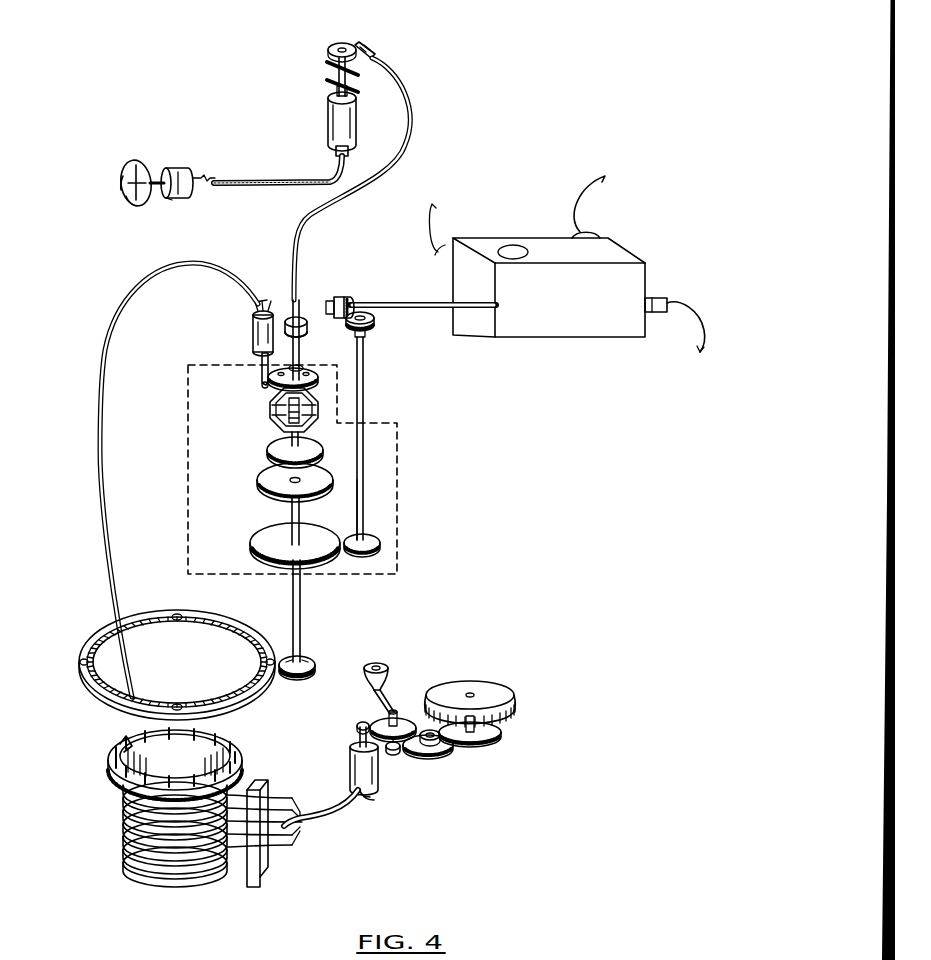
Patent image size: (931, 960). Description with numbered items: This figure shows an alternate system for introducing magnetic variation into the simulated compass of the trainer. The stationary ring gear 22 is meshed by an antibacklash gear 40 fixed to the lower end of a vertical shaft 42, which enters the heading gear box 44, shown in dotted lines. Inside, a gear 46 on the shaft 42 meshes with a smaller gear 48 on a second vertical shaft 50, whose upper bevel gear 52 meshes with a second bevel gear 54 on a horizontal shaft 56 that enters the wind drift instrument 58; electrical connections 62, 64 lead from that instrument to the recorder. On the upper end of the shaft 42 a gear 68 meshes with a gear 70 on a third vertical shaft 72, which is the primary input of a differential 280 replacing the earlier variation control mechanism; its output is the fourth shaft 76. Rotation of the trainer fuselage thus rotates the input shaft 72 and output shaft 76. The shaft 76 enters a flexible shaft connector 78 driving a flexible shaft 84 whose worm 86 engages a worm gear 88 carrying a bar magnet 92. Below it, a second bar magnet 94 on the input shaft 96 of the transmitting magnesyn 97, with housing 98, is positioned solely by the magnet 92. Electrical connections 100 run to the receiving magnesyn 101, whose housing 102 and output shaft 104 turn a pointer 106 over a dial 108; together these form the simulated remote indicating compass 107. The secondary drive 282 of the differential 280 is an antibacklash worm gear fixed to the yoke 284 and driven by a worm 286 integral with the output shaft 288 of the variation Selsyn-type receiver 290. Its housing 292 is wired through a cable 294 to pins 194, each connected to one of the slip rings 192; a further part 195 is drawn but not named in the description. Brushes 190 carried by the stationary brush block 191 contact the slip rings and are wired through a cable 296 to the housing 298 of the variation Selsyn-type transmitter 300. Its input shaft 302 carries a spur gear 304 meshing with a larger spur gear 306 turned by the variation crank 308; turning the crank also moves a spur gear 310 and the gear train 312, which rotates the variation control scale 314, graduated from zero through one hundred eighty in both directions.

The ring gear 22 is at (80, 673).
The antibacklash gear 40 is at (310, 658).
The vertical shaft 42 is at (302, 515).
The heading gear box 44 is at (400, 513).
The gear 46 is at (262, 546).
The smaller gear 48 is at (382, 546).
The second vertical shaft 50 is at (366, 492).
The bevel gear 52 is at (366, 315).
The second bevel gear 54 is at (352, 300).
The horizontal shaft 56 is at (420, 302).
The wind drift instrument 58 is at (520, 238).
The electrical connection 62 is at (593, 186).
The electrical connection 64 is at (700, 330).
The gear 68 is at (322, 478).
The gear 70 is at (318, 450).
The third vertical shaft 72 is at (302, 440).
The fourth shaft 76 is at (366, 342).
The flexible shaft connector 78 is at (302, 320).
The flexible shaft 84 is at (408, 148).
The worm 86 is at (372, 47).
The worm gear 88 is at (338, 45).
The bar magnet 92 is at (330, 63).
The second bar magnet 94 is at (330, 81).
The input shaft 96 is at (336, 92).
The transmitting magnesyn 97 is at (330, 139).
The housing 98 is at (330, 112).
The electrical connections 100 is at (242, 178).
The receiving magnesyn 101 is at (170, 198).
The housing 102 is at (187, 172).
The output shaft 104 is at (155, 180).
The pointer 106 is at (126, 176).
The simulated remote indicating compass 107 is at (127, 202).
The dial 108 is at (135, 172).
The brushes 190 is at (237, 864).
The brush block 191 is at (263, 880).
The slip rings 192 is at (125, 835).
The pins 194 is at (116, 752).
The brush ring 195 is at (118, 782).
The differential 280 is at (322, 399).
The secondary drive 282 is at (320, 376).
The yoke 284 is at (304, 412).
The worm 286 is at (303, 368).
The output shaft 288 is at (270, 370).
The variation Selsyn-type receiver 290 is at (270, 312).
The housing 292 is at (300, 316).
The cable 294 is at (100, 370).
The cable 296 is at (323, 820).
The housing 298 is at (373, 797).
The variation Selsyn-type transmitter 300 is at (348, 770).
The input shaft 302 is at (358, 741).
The spur gear 304 is at (357, 725).
The larger spur gear 306 is at (398, 722).
The variation crank 308 is at (386, 667).
The spur gear 310 is at (395, 753).
The gear train 312 is at (457, 751).
The variation control scale 314 is at (486, 692).